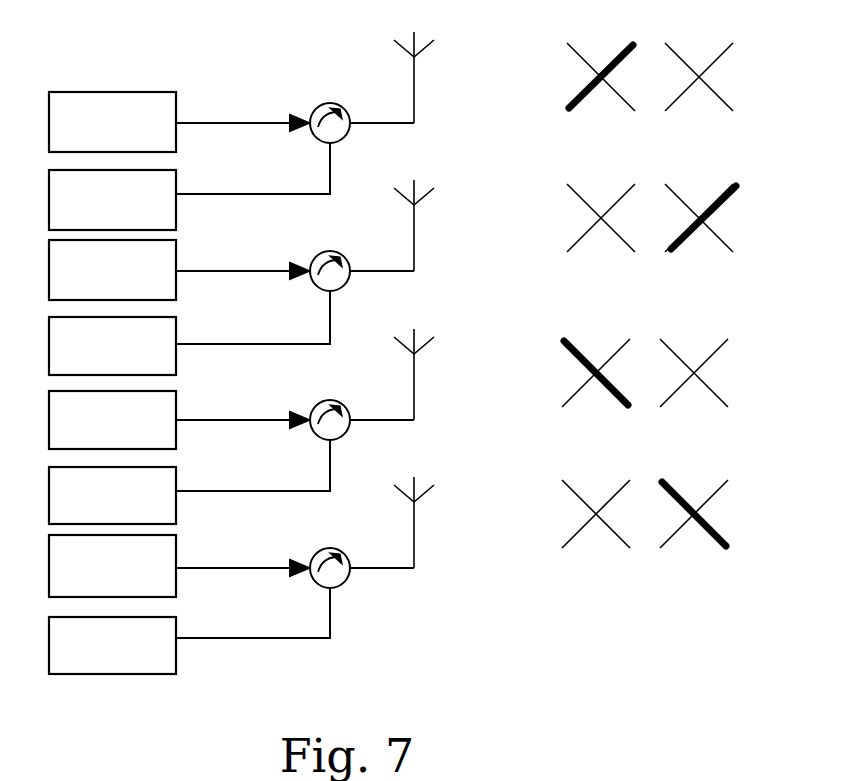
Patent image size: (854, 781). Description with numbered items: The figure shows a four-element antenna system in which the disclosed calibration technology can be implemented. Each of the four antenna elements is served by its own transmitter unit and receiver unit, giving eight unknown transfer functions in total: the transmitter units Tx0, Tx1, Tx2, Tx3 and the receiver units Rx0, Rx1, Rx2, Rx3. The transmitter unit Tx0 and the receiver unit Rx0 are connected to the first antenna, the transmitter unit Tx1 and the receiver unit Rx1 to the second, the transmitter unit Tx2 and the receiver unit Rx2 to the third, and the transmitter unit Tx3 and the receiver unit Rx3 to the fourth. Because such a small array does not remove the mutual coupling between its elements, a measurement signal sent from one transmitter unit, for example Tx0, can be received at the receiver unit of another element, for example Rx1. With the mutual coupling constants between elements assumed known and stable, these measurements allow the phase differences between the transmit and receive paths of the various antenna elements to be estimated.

The transmitter unit Tx0 is at (112, 122).
The receiver unit Rx0 is at (112, 200).
The transmitter unit Tx1 is at (112, 270).
The receiver unit Rx1 is at (112, 346).
The transmitter unit Tx2 is at (112, 420).
The receiver unit Rx2 is at (112, 495).
The transmitter unit Tx3 is at (112, 566).
The receiver unit Rx3 is at (112, 645).